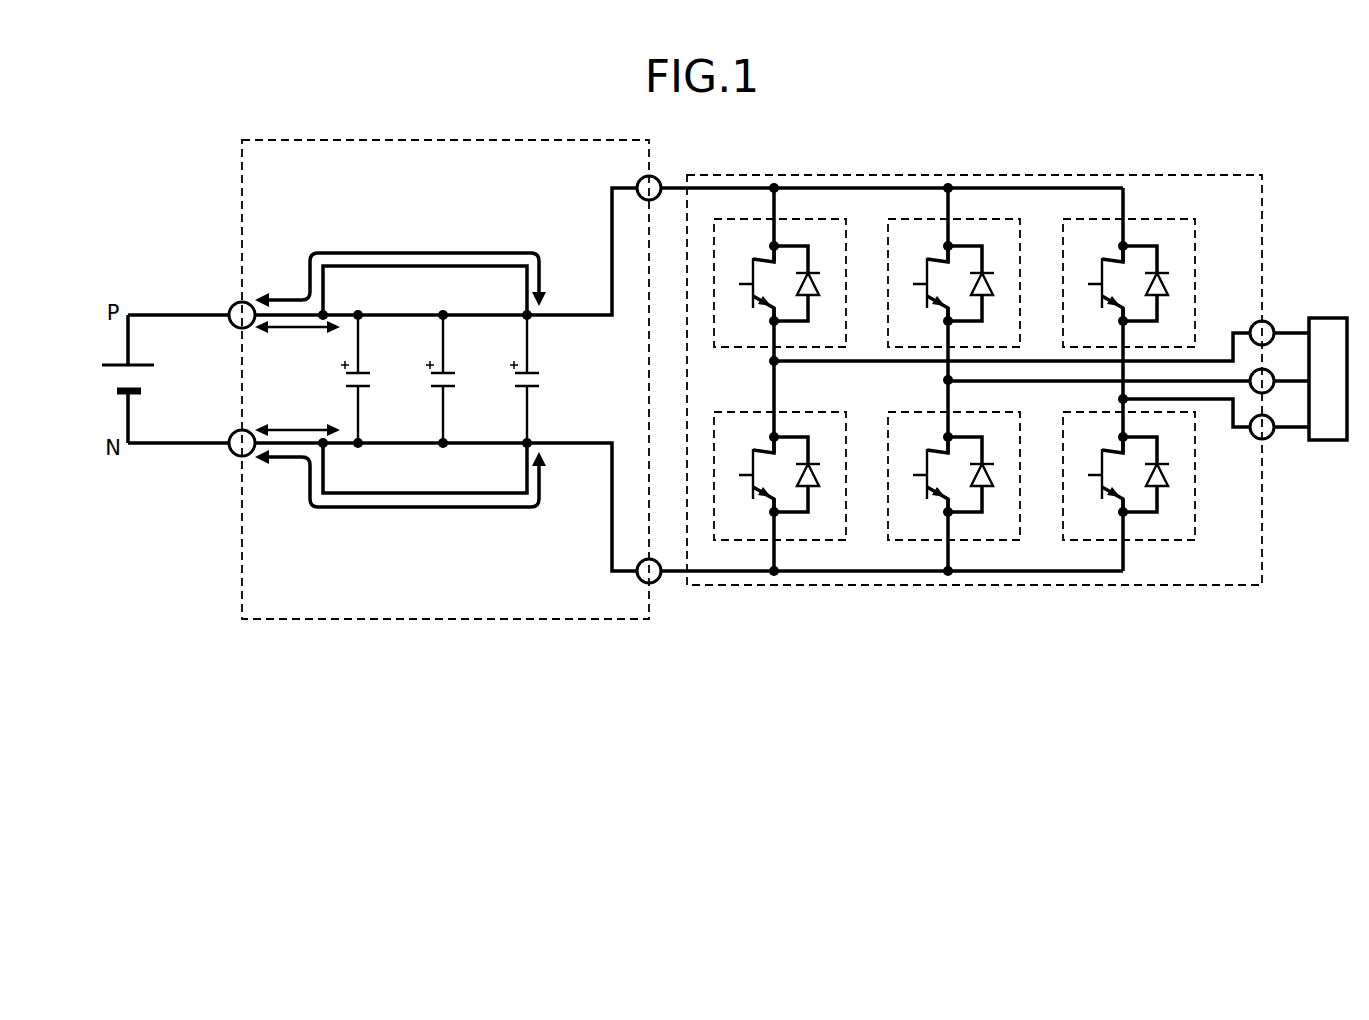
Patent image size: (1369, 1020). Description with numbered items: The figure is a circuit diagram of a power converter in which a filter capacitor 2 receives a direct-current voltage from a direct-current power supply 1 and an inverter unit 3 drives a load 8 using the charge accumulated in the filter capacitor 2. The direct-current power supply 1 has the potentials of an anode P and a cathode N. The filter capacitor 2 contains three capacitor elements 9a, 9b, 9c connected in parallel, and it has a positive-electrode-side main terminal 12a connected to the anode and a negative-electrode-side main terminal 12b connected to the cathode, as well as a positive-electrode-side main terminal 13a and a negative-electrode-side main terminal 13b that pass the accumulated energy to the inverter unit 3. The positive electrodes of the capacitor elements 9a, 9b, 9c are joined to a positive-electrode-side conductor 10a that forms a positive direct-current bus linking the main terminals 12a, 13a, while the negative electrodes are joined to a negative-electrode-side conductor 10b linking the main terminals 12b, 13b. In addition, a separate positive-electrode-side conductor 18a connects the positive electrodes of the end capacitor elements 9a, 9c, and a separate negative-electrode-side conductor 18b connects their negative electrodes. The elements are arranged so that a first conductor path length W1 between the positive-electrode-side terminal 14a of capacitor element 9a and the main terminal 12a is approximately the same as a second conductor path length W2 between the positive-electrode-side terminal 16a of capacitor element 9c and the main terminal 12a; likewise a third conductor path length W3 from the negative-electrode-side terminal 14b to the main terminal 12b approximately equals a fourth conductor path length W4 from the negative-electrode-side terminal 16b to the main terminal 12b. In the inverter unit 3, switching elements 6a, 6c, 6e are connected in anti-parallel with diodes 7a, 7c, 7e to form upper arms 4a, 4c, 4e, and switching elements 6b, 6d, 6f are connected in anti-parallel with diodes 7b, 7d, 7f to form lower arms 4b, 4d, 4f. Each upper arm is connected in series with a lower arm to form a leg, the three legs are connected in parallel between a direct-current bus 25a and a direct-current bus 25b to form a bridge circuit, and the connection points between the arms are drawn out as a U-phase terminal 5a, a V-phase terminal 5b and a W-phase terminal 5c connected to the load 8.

The direct-current power supply 1 is at (112, 364).
The filter capacitor 2 is at (242, 165).
The inverter unit 3 is at (1228, 175).
The upper arm 4a is at (806, 220).
The lower arm 4b is at (806, 540).
The upper arm 4c is at (980, 220).
The lower arm 4d is at (980, 540).
The upper arm 4e is at (1155, 220).
The lower arm 4f is at (1155, 540).
The U-phase terminal 5a is at (1272, 326).
The V-phase terminal 5b is at (1272, 374).
The W-phase terminal 5c is at (1272, 421).
The switching element 6a is at (753, 258).
The switching element 6b is at (753, 499).
The switching element 6c is at (927, 258).
The switching element 6d is at (927, 499).
The switching element 6e is at (1102, 258).
The switching element 6f is at (1102, 499).
The diode 7a is at (820, 284).
The diode 7b is at (820, 475).
The diode 7c is at (994, 284).
The diode 7d is at (994, 475).
The diode 7e is at (1169, 284).
The diode 7f is at (1169, 475).
The load 8 is at (1325, 318).
The capacitor element 9a is at (366, 372).
The capacitor element 9b is at (451, 372).
The capacitor element 9c is at (516, 388).
The positive-electrode-side conductor 10a is at (466, 311).
The negative-electrode-side conductor 10b is at (468, 449).
The positive-electrode-side main terminal 12a is at (232, 304).
The negative-electrode-side main terminal 12b is at (232, 458).
The positive-electrode-side main terminal 13a is at (657, 178).
The negative-electrode-side main terminal 13b is at (657, 582).
The positive-electrode-side terminal 14a is at (358, 314).
The negative-electrode-side terminal 14b is at (358, 445).
The positive-electrode-side terminal 16a is at (528, 318).
The negative-electrode-side terminal 16b is at (528, 443).
The positive-electrode-side conductor 18a is at (462, 266).
The negative-electrode-side conductor 18b is at (462, 493).
The direct-current bus 25a is at (820, 188).
The direct-current bus 25b is at (851, 579).
The first conductor path length W1 is at (297, 341).
The second conductor path length W2 is at (386, 253).
The third conductor path length W3 is at (297, 417).
The fourth conductor path length W4 is at (386, 507).